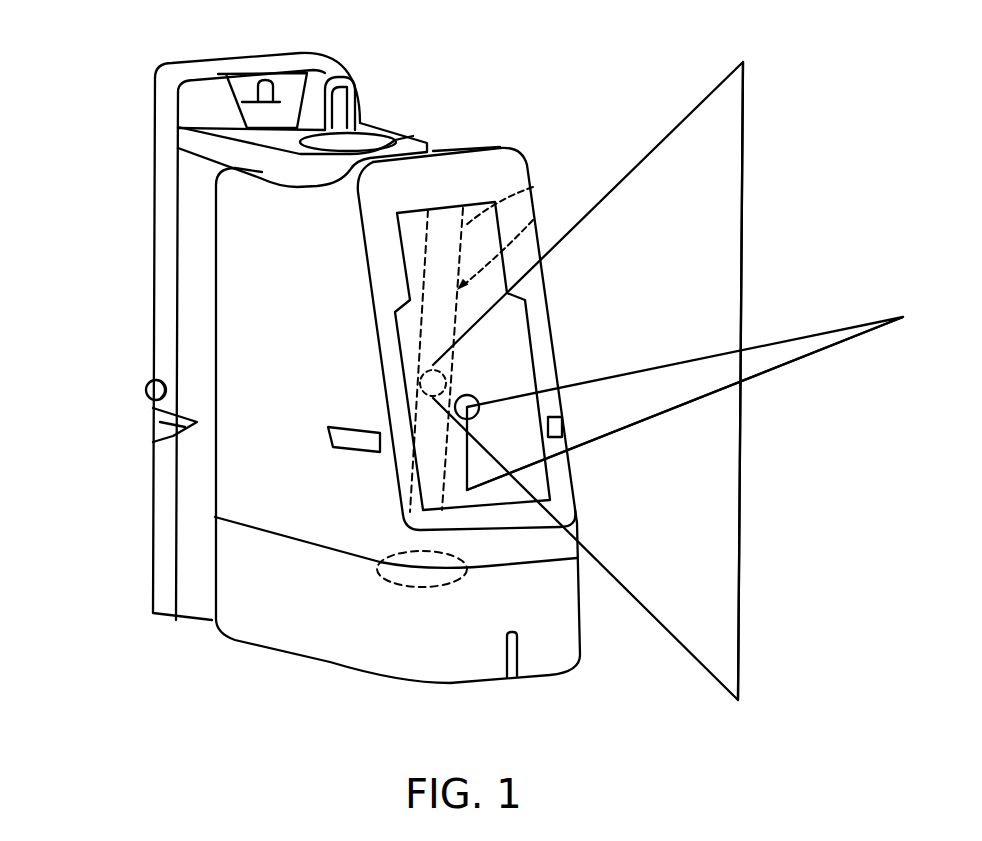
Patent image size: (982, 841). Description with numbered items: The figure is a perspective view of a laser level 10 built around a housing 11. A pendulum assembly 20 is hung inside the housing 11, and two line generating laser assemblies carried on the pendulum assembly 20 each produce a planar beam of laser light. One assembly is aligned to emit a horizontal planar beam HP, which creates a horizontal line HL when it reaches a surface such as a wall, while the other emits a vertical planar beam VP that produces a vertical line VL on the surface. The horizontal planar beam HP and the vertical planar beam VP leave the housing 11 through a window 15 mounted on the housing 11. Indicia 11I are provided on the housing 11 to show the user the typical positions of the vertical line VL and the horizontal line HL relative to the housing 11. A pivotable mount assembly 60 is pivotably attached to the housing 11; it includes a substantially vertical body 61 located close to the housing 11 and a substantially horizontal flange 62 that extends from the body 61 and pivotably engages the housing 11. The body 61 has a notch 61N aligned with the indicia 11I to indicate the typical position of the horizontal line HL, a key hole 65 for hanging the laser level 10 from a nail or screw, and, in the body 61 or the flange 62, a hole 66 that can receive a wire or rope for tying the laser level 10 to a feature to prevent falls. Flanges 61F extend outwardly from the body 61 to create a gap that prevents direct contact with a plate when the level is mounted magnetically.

The laser level 10 is at (128, 607).
The housing 11 is at (233, 478).
The indicia 11I is at (350, 430).
The window 15 is at (533, 187).
The pendulum assembly 20 is at (533, 220).
The pivotable mount assembly 60 is at (202, 329).
The body 61 is at (172, 268).
The flanges 61F is at (147, 392).
The notch 61N is at (157, 445).
The flange 62 is at (263, 160).
The key hole 65 is at (258, 92).
The hole 66 is at (354, 100).
The horizontal planar beam HP is at (800, 340).
The horizontal line HL is at (800, 358).
The vertical planar beam VP is at (718, 557).
The vertical line VL is at (740, 612).